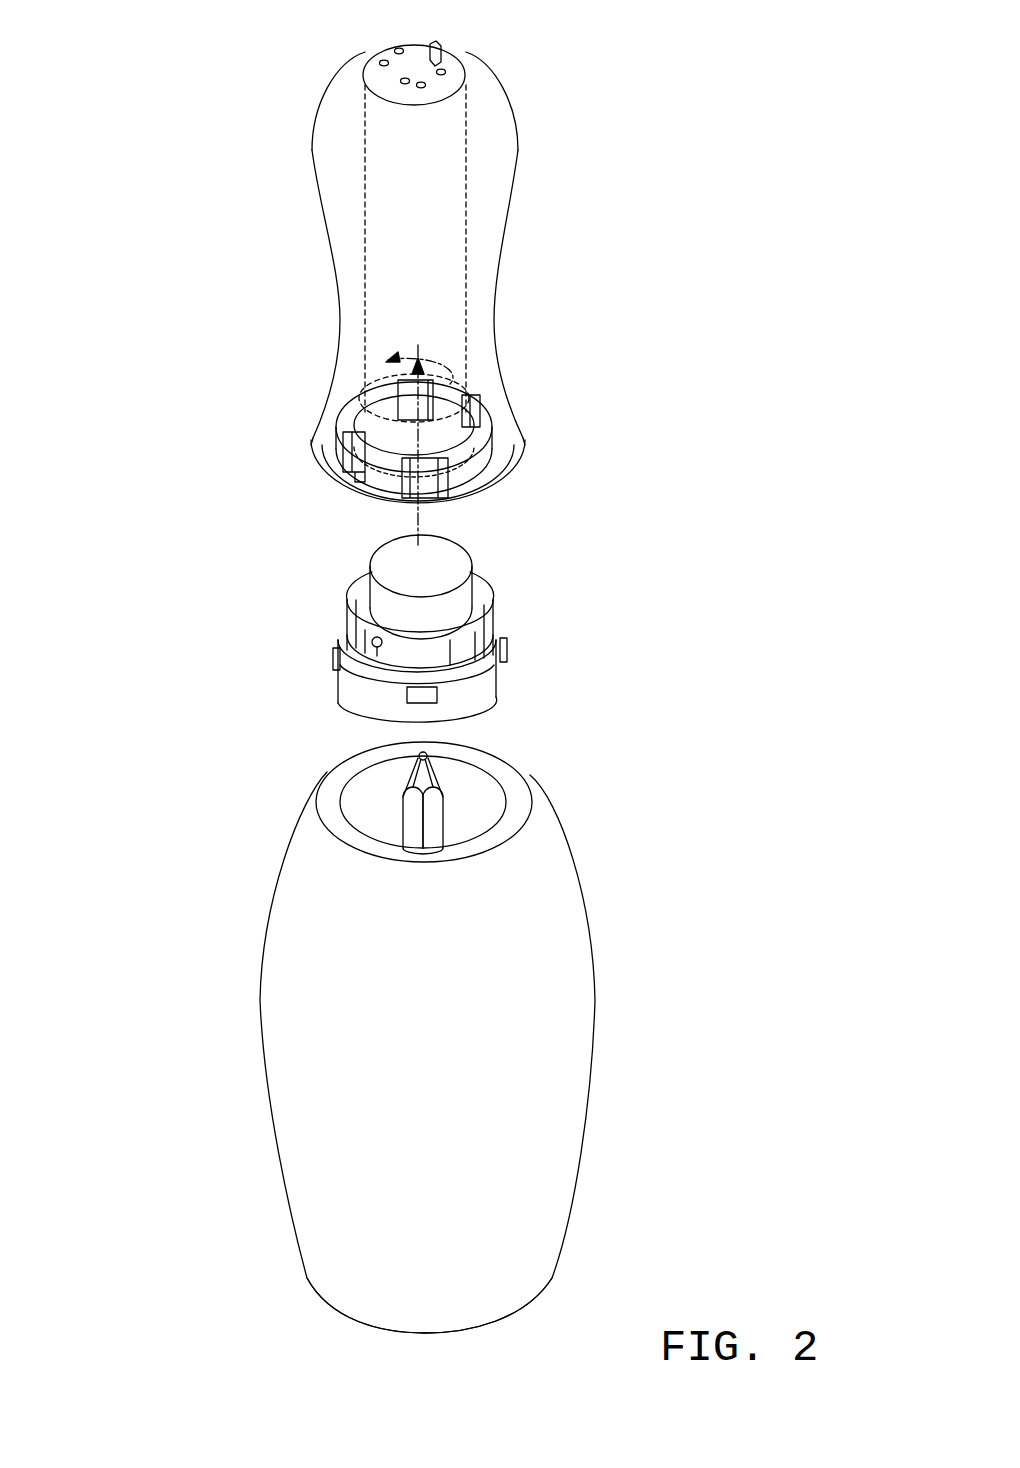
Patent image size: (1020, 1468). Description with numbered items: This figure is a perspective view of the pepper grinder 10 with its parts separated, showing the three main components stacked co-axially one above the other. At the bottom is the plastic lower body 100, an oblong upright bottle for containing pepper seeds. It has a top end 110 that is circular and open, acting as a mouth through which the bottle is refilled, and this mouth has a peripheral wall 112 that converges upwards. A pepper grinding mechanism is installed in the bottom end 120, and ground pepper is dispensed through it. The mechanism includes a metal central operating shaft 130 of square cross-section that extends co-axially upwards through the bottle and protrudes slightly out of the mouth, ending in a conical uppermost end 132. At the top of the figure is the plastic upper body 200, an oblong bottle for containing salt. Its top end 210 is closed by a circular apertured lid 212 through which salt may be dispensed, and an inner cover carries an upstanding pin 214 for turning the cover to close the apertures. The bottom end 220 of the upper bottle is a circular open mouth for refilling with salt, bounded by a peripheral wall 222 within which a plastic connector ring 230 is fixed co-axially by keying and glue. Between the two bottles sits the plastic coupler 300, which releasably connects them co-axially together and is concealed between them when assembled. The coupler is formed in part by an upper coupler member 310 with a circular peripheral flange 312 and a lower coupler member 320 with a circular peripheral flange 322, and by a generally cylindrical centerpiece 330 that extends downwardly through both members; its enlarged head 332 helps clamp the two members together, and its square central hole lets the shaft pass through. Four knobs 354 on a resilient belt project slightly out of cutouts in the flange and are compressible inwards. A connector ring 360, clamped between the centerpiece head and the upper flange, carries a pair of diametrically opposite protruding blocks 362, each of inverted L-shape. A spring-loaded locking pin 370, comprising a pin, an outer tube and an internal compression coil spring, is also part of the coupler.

The pepper grinder 10 is at (148, 333).
The lower body 100 is at (670, 953).
The top end 110 is at (355, 788).
The peripheral wall 112 is at (358, 832).
The bottom end 120 is at (342, 1306).
The central operating shaft 130 is at (437, 810).
The conical uppermost end 132 is at (428, 773).
The upper body 200 is at (598, 269).
The top end 210 is at (468, 83).
The apertured lid 212 is at (368, 82).
The upstanding pin 214 is at (442, 44).
The bottom end 220 is at (518, 478).
The peripheral wall 222 is at (520, 452).
The connector ring 230 is at (495, 420).
The coupler 300 is at (296, 618).
The upper coupler member 310 is at (438, 681).
The peripheral flange 312 is at (362, 673).
The lower coupler member 320 is at (486, 685).
The peripheral flange 322 is at (485, 690).
The centerpiece 330 is at (367, 581).
The enlarged head 332 is at (395, 555).
The knobs 354 is at (340, 648).
The connector ring 360 is at (475, 590).
The protruding blocks 362 is at (358, 583).
The locking pin 370 is at (372, 640).